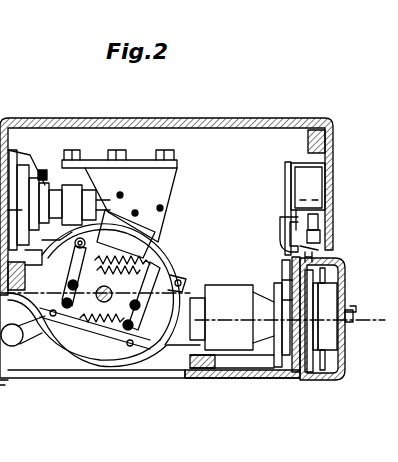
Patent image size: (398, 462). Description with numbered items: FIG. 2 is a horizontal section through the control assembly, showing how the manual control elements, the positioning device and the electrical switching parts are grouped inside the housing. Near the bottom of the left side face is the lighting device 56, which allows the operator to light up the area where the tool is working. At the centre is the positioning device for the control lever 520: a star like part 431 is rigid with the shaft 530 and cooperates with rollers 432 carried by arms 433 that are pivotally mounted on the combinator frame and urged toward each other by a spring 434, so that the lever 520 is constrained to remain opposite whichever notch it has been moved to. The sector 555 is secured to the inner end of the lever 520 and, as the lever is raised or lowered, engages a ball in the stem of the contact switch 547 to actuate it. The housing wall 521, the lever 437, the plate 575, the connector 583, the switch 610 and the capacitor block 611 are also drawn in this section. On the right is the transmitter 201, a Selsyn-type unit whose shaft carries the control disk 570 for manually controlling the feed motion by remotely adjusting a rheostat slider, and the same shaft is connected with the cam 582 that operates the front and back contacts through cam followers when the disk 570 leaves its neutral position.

The lighting device 56 is at (30, 185).
The transmitter 201 is at (233, 292).
The star like part 431 is at (90, 312).
The rollers 432 is at (72, 282).
The arms 433 is at (80, 262).
The spring 434 is at (146, 262).
The lever 437 is at (0, 405).
The lever 520 is at (30, 340).
The housing wall 521 is at (68, 364).
The shaft 530 is at (104, 303).
The contact switch 547 is at (143, 240).
The sector 555 is at (162, 283).
The control disk 570 is at (330, 346).
The mounting plate 575 is at (287, 362).
The cam 582 is at (295, 282).
The connector 583 is at (288, 238).
The switch 610 is at (313, 222).
The capacitor block 611 is at (297, 168).